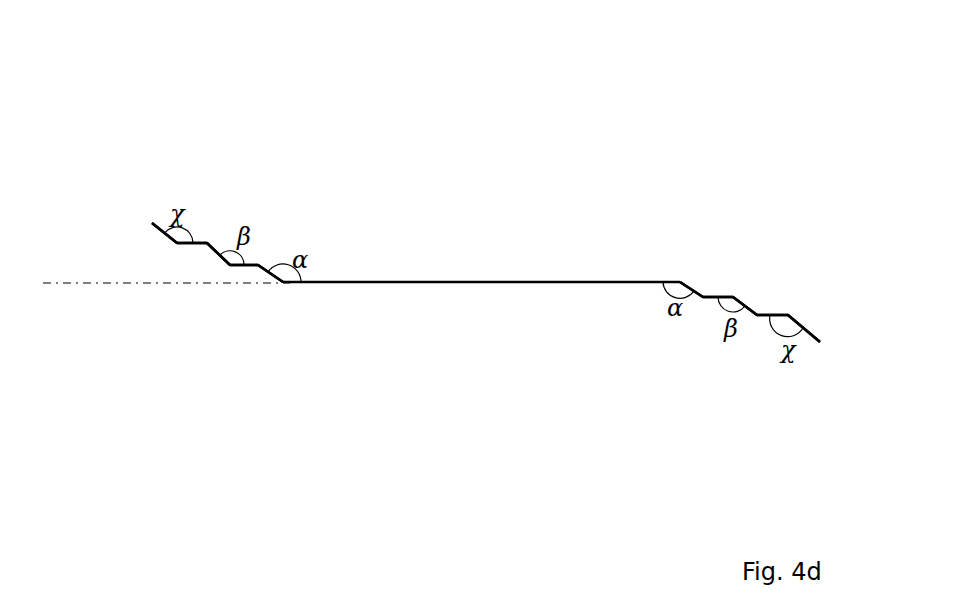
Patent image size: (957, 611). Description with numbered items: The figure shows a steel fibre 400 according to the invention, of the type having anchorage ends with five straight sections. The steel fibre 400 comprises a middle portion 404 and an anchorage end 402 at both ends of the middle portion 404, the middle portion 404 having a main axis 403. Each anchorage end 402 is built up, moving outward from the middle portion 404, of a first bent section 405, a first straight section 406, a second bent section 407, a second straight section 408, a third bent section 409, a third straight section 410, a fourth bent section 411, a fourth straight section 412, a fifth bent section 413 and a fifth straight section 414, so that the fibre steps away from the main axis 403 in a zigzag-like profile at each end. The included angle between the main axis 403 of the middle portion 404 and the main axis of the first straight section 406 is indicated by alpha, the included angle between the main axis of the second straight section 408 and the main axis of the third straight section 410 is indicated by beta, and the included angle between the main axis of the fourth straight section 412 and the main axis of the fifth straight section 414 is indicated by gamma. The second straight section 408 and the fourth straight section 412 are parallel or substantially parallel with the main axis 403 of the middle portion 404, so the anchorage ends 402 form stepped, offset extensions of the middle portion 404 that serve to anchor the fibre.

The steel fibre 400 is at (135, 85).
The anchorage end 402 is at (730, 220).
The main axis 403 is at (107, 283).
The middle portion 404 is at (498, 282).
The first bent section 405 is at (284, 284).
The first straight section 406 is at (704, 296).
The second bent section 407 is at (262, 265).
The second straight section 408 is at (735, 297).
The third bent section 409 is at (229, 267).
The third straight section 410 is at (758, 313).
The fourth bent section 411 is at (206, 243).
The fourth straight section 412 is at (789, 316).
The fifth bent section 413 is at (177, 245).
The fifth straight section 414 is at (810, 333).